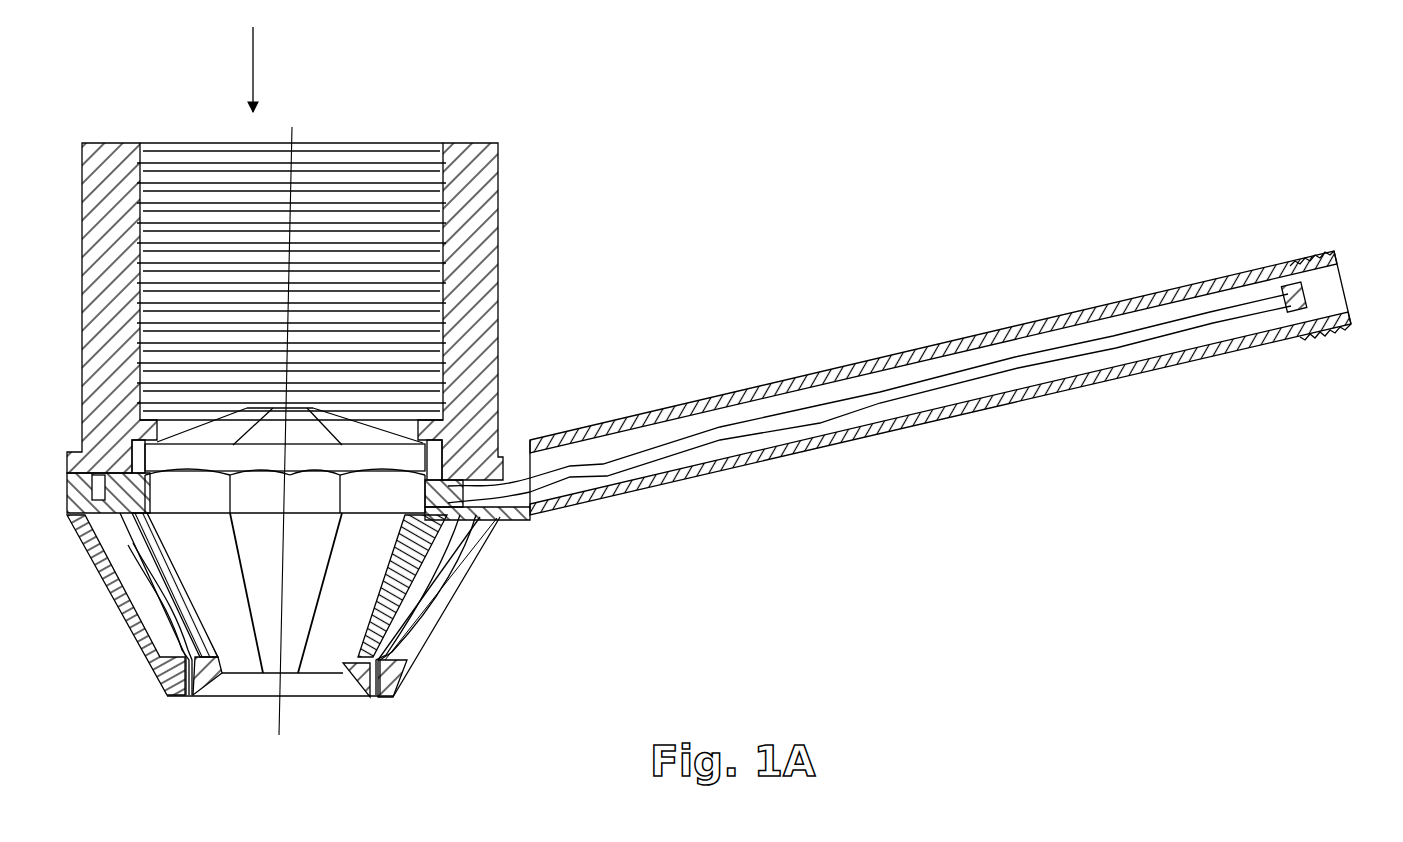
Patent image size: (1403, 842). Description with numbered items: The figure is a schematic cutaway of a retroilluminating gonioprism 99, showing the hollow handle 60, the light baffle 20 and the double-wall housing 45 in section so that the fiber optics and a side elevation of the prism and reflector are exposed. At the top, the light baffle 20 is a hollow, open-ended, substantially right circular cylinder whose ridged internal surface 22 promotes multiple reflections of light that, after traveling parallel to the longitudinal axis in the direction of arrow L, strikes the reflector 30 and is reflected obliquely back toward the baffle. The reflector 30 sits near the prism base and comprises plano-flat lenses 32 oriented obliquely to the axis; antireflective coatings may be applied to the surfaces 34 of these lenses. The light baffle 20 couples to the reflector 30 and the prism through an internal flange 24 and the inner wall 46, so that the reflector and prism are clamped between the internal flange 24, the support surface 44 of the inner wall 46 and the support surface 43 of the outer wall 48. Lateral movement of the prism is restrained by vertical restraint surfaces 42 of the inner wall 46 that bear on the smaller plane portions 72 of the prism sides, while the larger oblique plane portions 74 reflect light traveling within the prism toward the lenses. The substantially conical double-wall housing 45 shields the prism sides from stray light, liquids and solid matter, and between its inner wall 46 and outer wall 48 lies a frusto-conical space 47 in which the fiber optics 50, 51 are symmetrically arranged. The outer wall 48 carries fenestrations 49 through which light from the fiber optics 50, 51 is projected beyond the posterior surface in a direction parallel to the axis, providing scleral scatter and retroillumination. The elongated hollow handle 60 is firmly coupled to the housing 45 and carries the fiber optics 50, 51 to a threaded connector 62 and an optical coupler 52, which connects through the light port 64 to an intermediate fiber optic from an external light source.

The light baffle 20 is at (310, 282).
The ridged internal surface 22 is at (440, 160).
The internal flange 24 is at (140, 444).
The reflector 30 is at (285, 472).
The plano-flat lens 32 is at (293, 463).
The surface of lens 34 is at (223, 432).
The vertical restraint surface 42 is at (148, 502).
The support surface 43 is at (360, 657).
The support surface 44 is at (156, 528).
The double-wall housing 45 is at (661, 514).
The inner wall 46 is at (447, 542).
The frusto-conical space 47 is at (400, 643).
The outer wall 48 is at (98, 572).
The fenestrations 49 is at (380, 685).
The fiber optic 50 is at (428, 585).
The fiber optic 51 is at (147, 612).
The optical coupler 52 is at (1303, 291).
The hollow handle 60 is at (964, 351).
The connector 62 is at (1325, 258).
The light port 64 is at (1321, 263).
The plane portion 72 is at (408, 508).
The plane portion 74 is at (252, 617).
The retroilluminating gonioprism 99 is at (714, 395).